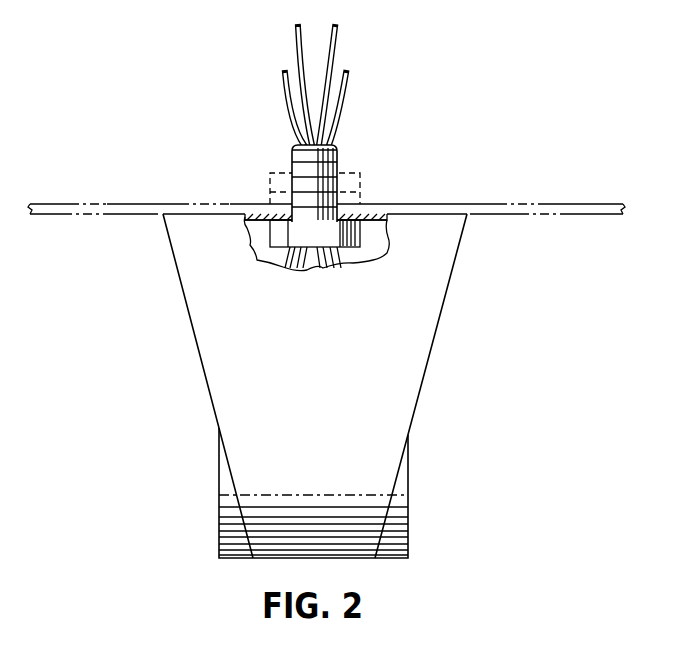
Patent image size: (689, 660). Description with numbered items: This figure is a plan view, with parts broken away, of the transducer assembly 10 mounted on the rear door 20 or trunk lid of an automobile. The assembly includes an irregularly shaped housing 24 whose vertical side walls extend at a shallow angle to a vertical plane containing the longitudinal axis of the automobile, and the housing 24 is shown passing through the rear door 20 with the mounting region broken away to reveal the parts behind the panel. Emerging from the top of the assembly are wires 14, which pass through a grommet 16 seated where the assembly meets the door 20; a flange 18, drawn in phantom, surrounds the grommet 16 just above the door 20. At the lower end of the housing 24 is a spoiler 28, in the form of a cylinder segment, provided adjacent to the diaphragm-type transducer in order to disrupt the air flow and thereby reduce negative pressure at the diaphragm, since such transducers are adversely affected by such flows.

The transducer assembly 10 is at (300, 386).
The conductor wires 14 is at (345, 92).
The grommet / strain relief bushing 16 is at (298, 155).
The mounting flange (phantom) 18 is at (368, 173).
The rear door 20 is at (558, 202).
The housing 24 is at (323, 357).
The spoiler 28 is at (400, 520).